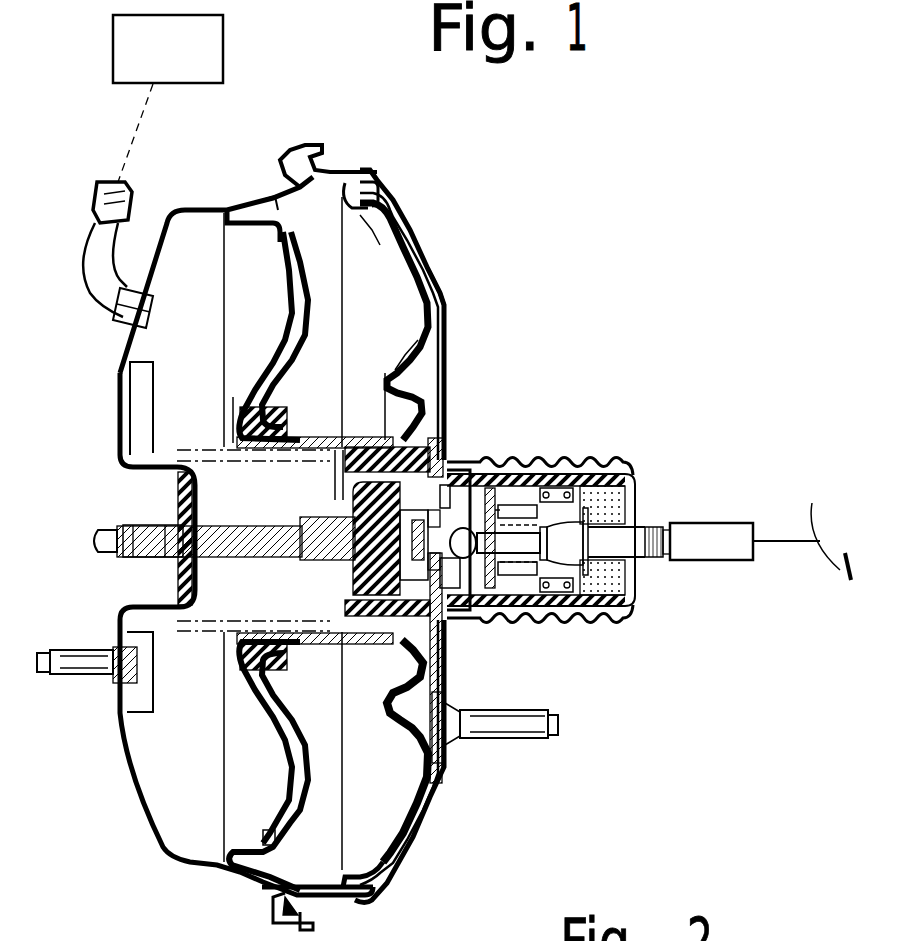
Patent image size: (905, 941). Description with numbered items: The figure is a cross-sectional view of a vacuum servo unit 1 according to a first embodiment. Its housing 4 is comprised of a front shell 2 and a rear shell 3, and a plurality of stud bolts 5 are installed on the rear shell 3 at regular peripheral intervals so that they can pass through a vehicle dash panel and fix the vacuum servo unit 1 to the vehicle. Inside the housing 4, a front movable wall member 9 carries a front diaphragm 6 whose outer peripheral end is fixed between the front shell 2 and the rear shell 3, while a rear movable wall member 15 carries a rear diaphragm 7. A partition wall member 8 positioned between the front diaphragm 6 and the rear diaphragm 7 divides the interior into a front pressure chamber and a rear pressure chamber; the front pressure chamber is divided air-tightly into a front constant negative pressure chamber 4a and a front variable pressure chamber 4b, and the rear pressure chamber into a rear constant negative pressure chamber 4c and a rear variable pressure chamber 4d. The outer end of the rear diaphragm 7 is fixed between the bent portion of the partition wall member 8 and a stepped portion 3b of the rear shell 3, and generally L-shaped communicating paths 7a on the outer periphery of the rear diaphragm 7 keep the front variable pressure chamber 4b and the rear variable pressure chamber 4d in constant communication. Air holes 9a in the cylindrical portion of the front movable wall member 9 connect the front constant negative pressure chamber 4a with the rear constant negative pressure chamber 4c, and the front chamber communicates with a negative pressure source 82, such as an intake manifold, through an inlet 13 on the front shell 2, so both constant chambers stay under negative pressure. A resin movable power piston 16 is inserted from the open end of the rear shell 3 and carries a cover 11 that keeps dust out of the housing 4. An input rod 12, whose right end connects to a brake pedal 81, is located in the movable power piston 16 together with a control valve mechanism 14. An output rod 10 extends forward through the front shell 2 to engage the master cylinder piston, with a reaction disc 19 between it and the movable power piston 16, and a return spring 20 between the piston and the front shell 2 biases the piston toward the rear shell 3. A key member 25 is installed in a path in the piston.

The vacuum servo unit 1 is at (520, 294).
The front shell 2 is at (193, 205).
The rear shell 3 is at (378, 544).
The stepped portion 3b is at (367, 897).
The housing 4 is at (359, 489).
The front constant negative pressure chamber 4a is at (170, 347).
The front variable pressure chamber 4b is at (268, 193).
The rear constant negative pressure chamber 4c is at (365, 227).
The rear variable pressure chamber 4d is at (427, 352).
The stud bolts 5 is at (540, 708).
The front diaphragm 6 is at (247, 202).
The rear diaphragm 7 is at (372, 485).
The communicating paths 7a is at (356, 190).
The partition wall member 8 is at (312, 282).
The front movable wall member 9 is at (288, 316).
The air holes 9a is at (422, 398).
The output rod 10 is at (243, 525).
The cover 11 is at (613, 453).
The input rod 12 is at (700, 523).
The inlet 13 is at (100, 181).
The control valve mechanism 14 is at (513, 457).
The rear movable wall member 15 is at (437, 293).
The movable power piston 16 is at (447, 457).
The reaction disc 19 is at (373, 568).
The return spring 20 is at (217, 627).
The key member 25 is at (443, 663).
The brake pedal 81 is at (823, 503).
The negative pressure source 82 is at (223, 45).